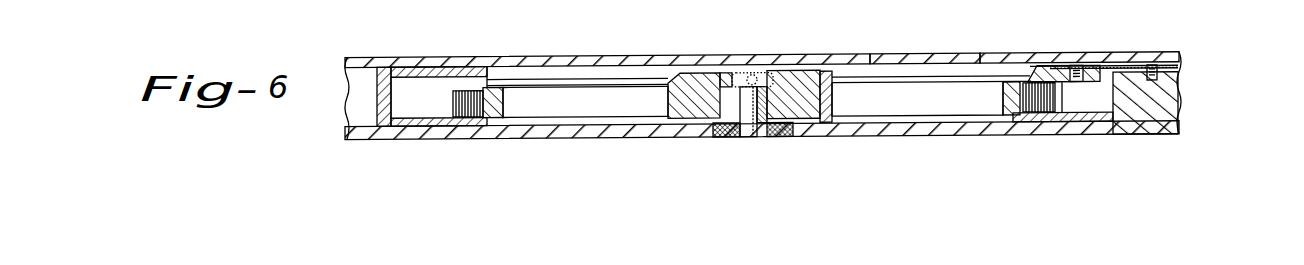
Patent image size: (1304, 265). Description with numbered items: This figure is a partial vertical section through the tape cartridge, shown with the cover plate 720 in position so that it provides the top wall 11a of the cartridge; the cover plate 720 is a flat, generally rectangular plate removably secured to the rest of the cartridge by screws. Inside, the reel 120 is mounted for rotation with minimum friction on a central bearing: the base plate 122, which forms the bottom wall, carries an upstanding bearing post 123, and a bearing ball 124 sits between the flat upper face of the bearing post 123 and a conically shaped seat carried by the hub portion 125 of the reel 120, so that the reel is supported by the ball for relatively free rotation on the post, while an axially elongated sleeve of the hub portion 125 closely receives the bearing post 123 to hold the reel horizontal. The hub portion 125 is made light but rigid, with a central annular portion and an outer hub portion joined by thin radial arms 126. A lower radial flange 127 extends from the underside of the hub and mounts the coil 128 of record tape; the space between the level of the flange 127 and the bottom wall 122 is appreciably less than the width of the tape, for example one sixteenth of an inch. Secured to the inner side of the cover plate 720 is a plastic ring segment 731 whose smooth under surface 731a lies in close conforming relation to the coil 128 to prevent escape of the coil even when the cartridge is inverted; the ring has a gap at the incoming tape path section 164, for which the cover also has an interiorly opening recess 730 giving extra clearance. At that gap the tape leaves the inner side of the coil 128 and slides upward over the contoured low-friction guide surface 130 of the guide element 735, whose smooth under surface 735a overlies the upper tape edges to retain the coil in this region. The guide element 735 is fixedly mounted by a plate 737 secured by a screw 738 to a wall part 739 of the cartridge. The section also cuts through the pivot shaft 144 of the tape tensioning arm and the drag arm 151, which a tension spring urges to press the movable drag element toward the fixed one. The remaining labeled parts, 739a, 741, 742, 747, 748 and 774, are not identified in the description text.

The top wall 11a is at (910, 62).
The reel 120 is at (428, 106).
The base plate 122 is at (616, 142).
The bearing post 123 is at (748, 143).
The bearing ball 124 is at (763, 77).
The hub portion 125 is at (827, 83).
The radial arms 126 is at (570, 117).
The lower radial flange 127 is at (413, 142).
The coil of record tape 128 is at (467, 108).
The guide surface 130 is at (1060, 72).
The pivot shaft 144 is at (684, 108).
The drag arm 151 is at (378, 93).
The tape path section 164 is at (1030, 70).
The cover plate 720 is at (603, 63).
The recess 730 is at (988, 67).
The ring segment 731 is at (422, 70).
The under surface 731a is at (466, 80).
The guide element 735 is at (1101, 75).
The under surface 735a is at (1058, 121).
The plate 737 is at (1141, 74).
The screw 738 is at (1166, 70).
The wall part 739 is at (1131, 113).
The plug sleeve 739a is at (1101, 116).
The lower nut 741 is at (731, 143).
The lower nut 742 is at (796, 140).
The valve block 747 is at (788, 83).
The valve cap 748 is at (736, 79).
The end block 774 is at (377, 116).